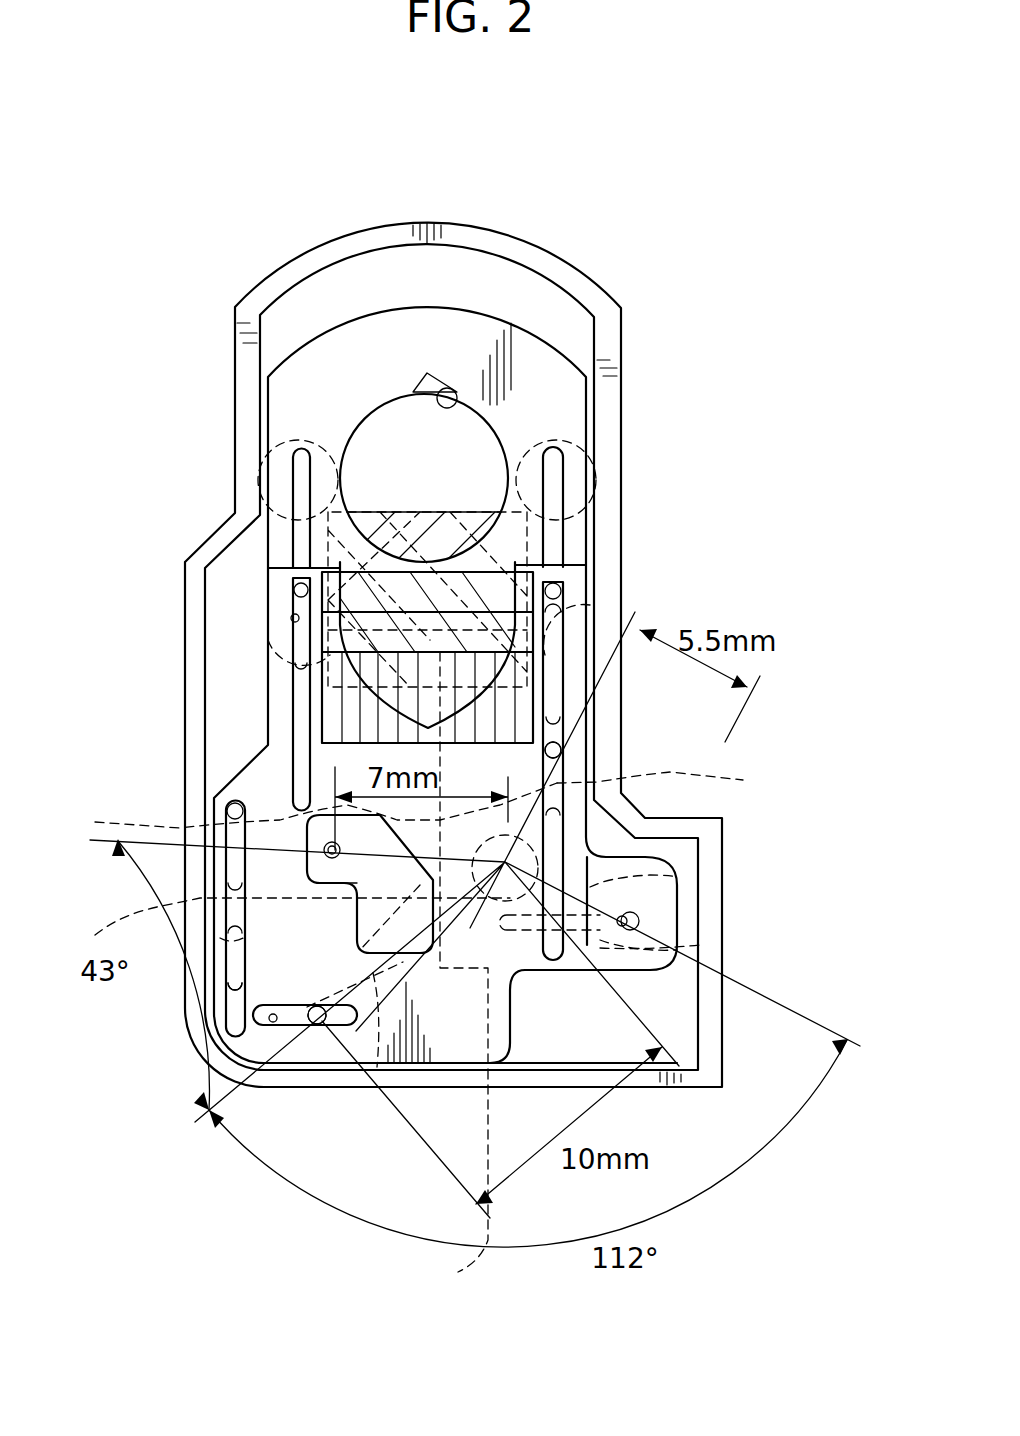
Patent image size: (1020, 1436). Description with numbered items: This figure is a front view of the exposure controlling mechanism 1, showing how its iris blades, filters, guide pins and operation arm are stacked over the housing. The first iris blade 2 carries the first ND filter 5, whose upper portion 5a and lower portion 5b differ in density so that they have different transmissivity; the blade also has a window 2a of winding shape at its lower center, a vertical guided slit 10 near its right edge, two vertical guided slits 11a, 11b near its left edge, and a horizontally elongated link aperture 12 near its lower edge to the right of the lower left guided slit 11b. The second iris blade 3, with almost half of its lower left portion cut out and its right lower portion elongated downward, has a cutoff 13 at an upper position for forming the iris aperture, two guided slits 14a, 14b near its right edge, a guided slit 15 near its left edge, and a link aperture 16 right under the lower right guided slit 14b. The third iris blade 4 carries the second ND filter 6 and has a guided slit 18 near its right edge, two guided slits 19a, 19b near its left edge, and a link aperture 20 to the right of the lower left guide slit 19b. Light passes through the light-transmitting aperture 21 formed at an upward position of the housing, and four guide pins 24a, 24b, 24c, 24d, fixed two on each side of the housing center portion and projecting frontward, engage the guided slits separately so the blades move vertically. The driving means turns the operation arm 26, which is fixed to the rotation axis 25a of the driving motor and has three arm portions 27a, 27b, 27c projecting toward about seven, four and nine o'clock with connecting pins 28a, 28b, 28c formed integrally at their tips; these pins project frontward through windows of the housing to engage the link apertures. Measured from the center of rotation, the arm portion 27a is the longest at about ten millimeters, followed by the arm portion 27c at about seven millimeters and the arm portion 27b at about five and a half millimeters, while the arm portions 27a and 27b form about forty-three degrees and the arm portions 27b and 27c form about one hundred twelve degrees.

The exposure controlling mechanism 1 is at (590, 238).
The first iris blade 2 is at (444, 1080).
The window 2a is at (164, 856).
The second iris blade 3 is at (565, 345).
The third iris blade 4 is at (585, 437).
The first ND filter 5 is at (310, 694).
The upper portion 5a is at (322, 640).
The lower portion 5b is at (335, 738).
The second ND filter 6 is at (428, 512).
The guided slit 10 is at (508, 858).
The guided slit 11a is at (292, 620).
The guided slit 11b is at (237, 982).
The link aperture 12 is at (280, 1015).
The cutoff 13 is at (427, 373).
The guided slit 14a is at (556, 492).
The guided slit 14b is at (681, 788).
The guided slit 15 is at (296, 470).
The link aperture 16 is at (735, 978).
The guided slit 18 is at (590, 600).
The guided slit 19a is at (262, 462).
The guided slit 19b is at (275, 919).
The link aperture 20 is at (433, 880).
The light-transmitting aperture 21 is at (468, 390).
The guide pin 24a is at (298, 590).
The guide pin 24b is at (234, 810).
The guide pin 24c is at (553, 590).
The guide pin 24d is at (553, 750).
The rotation axis 25a is at (458, 1186).
The operation arm 26 is at (690, 876).
The arm portion 27a is at (312, 1030).
The arm portion 27b is at (700, 948).
The arm portion 27c is at (299, 811).
The connecting pin 28a is at (290, 1030).
The connecting pin 28b is at (640, 925).
The connecting pin 28c is at (357, 887).